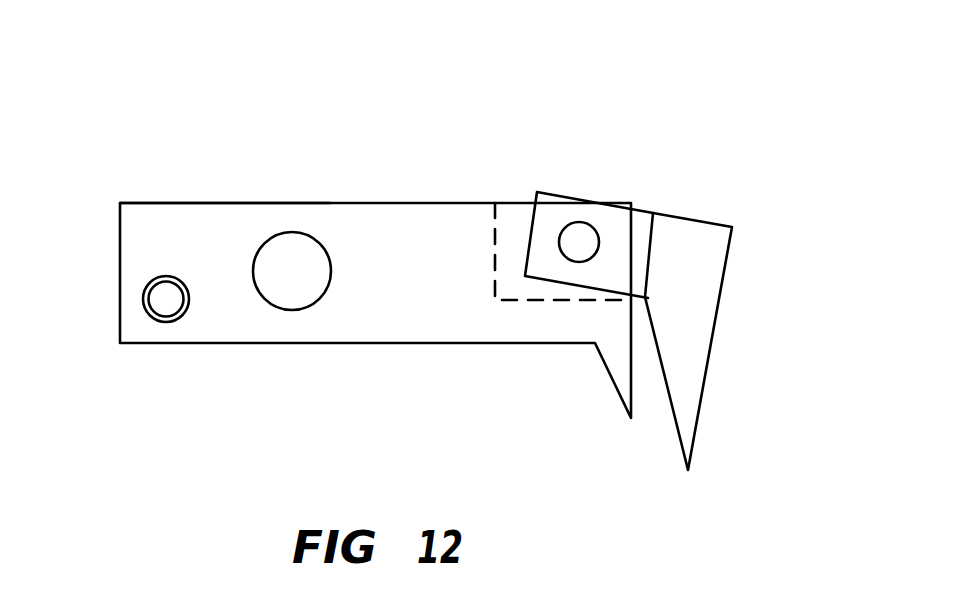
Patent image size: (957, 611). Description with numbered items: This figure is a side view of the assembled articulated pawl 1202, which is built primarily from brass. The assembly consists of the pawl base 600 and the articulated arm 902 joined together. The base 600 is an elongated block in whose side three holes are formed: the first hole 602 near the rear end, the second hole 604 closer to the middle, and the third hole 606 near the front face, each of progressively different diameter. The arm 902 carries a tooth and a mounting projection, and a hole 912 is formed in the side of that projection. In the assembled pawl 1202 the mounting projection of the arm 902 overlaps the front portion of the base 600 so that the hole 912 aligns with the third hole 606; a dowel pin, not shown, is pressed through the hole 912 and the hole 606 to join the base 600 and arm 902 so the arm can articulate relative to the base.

The pawl base 600 is at (365, 315).
The first hole 602 is at (153, 320).
The second hole 604 is at (298, 268).
The third hole 606 is at (573, 220).
The hole 912 is at (589, 187).
The articulated arm 902 is at (703, 268).
The assembled articulated pawl 1202 is at (165, 180).